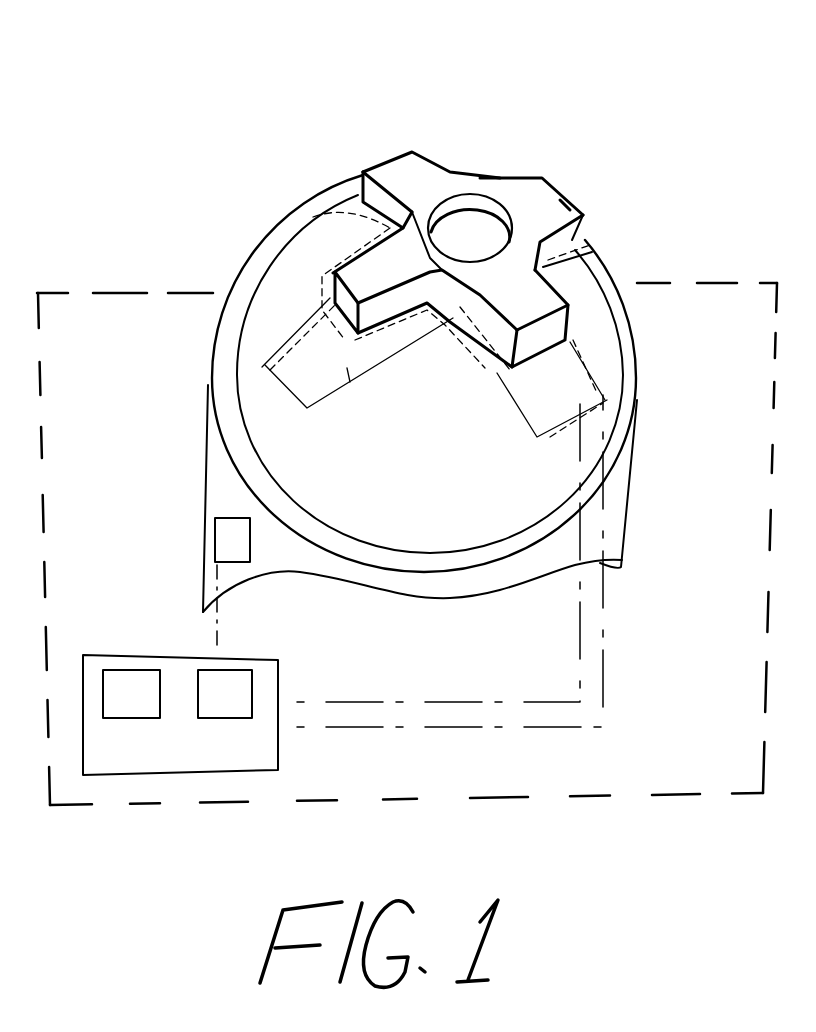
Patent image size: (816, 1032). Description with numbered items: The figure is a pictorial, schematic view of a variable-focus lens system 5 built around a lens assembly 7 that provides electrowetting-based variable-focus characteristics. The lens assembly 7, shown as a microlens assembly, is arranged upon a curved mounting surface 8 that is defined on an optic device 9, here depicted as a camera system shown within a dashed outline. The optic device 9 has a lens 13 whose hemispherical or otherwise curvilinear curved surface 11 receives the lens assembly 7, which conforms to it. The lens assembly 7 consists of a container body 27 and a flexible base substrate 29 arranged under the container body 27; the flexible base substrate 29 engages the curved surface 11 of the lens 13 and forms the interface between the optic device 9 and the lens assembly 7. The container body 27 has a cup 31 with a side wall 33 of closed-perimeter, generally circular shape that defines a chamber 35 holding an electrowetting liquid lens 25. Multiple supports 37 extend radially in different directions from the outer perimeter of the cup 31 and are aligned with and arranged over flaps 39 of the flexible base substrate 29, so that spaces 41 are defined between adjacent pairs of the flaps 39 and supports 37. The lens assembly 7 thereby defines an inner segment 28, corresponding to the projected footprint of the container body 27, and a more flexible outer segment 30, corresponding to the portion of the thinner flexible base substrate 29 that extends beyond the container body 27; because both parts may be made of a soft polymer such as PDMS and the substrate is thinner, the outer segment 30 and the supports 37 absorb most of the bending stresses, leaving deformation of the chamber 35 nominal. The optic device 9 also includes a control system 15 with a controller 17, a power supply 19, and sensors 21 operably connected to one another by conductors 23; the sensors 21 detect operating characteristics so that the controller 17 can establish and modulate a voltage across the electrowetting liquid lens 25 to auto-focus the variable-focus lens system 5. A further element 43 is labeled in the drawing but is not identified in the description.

The variable-focus lens system 5 is at (158, 60).
The lens assembly 7 is at (565, 164).
The curved mounting surface 8 is at (606, 341).
The optic device 9 is at (735, 275).
The curved surface 11 is at (267, 293).
The lens 13 is at (284, 236).
The control system 15 is at (195, 792).
The controller 17 is at (232, 708).
The power supply 19 is at (130, 703).
The sensors 21 is at (222, 540).
The conductors 23 is at (218, 612).
The electrowetting liquid lens 25 is at (468, 202).
The container body 27 is at (502, 170).
The inner segment 28 is at (375, 322).
The flexible base substrate 29 is at (258, 337).
The outer segment 30 is at (322, 380).
The cup 31 is at (511, 194).
The side wall 33 is at (563, 210).
The chamber 35 is at (447, 200).
The supports 37 is at (340, 270).
The flaps 39 is at (283, 342).
The spaces 41 is at (310, 182).
The recess bottom 43 is at (373, 393).